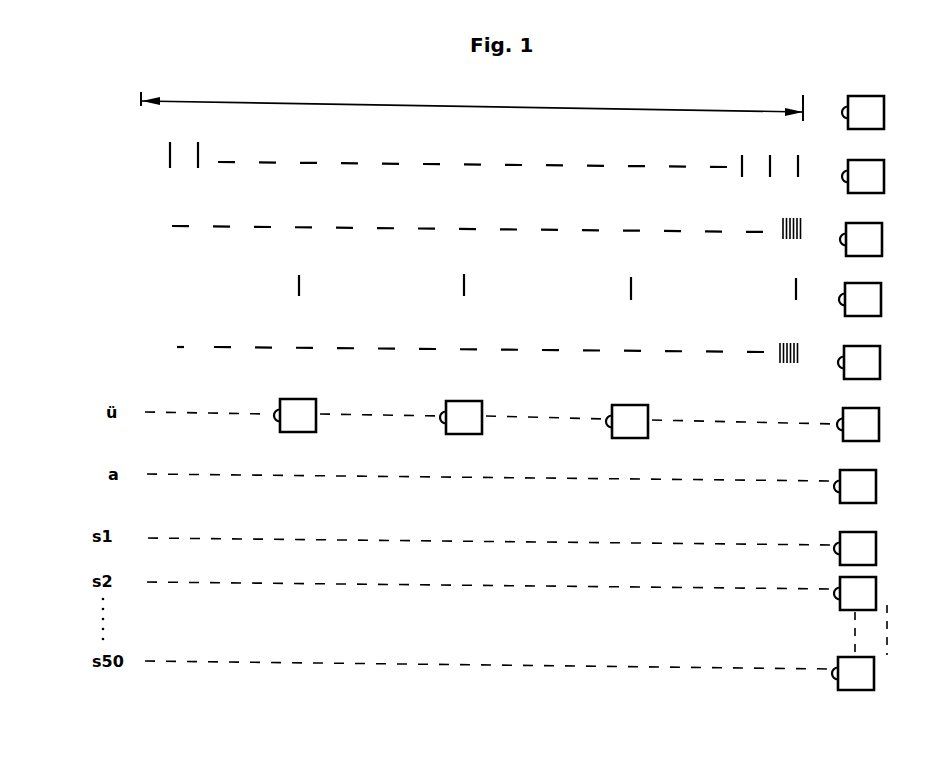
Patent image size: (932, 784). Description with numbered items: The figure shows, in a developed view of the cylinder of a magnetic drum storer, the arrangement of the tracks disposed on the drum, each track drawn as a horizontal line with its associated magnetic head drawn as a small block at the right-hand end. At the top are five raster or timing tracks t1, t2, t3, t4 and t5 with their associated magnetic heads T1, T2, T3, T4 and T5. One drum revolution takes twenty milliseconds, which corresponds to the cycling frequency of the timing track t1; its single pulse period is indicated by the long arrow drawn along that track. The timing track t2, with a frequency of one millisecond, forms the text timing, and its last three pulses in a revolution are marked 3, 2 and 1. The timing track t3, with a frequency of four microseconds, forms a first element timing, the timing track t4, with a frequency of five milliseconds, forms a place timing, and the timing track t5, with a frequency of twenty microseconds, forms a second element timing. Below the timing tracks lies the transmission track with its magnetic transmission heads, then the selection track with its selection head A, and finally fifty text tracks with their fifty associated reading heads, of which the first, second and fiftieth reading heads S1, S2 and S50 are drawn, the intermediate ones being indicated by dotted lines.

The magnetic head T1 is at (880, 112).
The magnetic head T2 is at (880, 176).
The magnetic head T3 is at (878, 239).
The magnetic head T4 is at (877, 299).
The magnetic head T5 is at (875, 362).
The selection head A is at (867, 486).
The reading head S1 is at (871, 548).
The reading head S2 is at (871, 593).
The reading head S50 is at (875, 673).
The pulse 1 of t2 train 1 is at (798, 177).
The pulse 2 of t2 train 2 is at (769, 177).
The pulse 3 of t2 train 3 is at (741, 177).
The timing track t1 is at (420, 106).
The timing track t2 is at (382, 157).
The timing track t3 is at (419, 228).
The timing track t4 is at (416, 287).
The timing track t5 is at (417, 351).